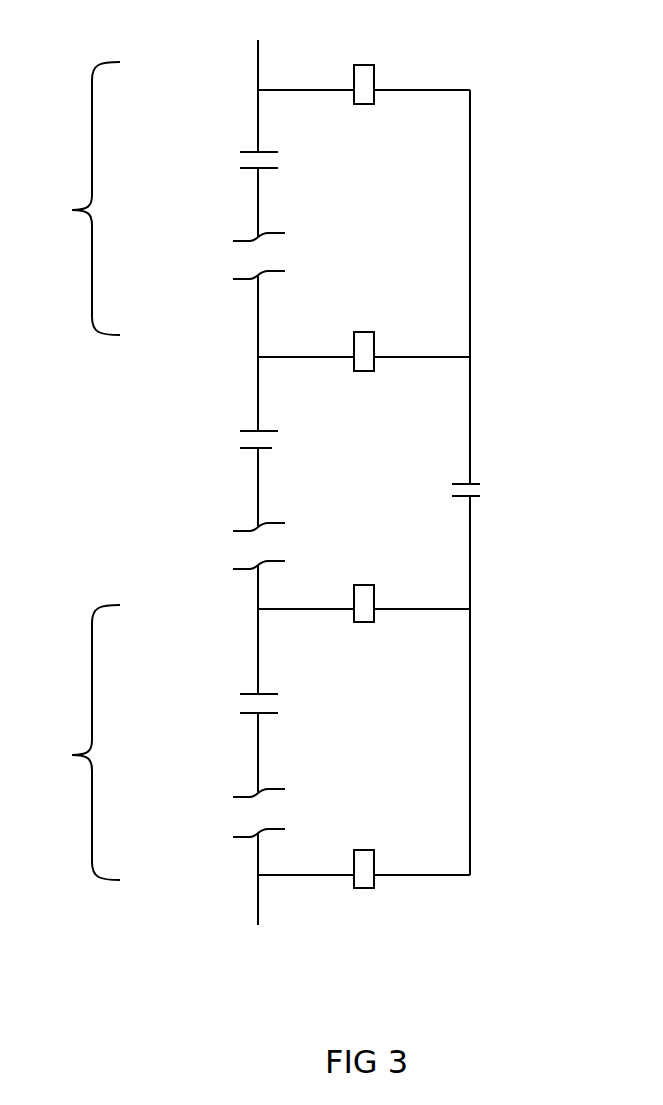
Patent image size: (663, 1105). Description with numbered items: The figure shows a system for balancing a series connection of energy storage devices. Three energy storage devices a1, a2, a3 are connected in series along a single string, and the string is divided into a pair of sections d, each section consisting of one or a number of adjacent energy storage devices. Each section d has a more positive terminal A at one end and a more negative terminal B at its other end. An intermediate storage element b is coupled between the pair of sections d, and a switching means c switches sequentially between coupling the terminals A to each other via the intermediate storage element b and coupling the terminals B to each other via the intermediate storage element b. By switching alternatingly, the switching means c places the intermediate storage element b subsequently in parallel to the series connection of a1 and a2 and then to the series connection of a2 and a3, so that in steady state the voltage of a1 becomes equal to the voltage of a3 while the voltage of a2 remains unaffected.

The more positive terminal A is at (252, 95).
The more negative terminal B is at (252, 356).
The energy storage device a1 is at (218, 162).
The energy storage device a2 is at (218, 443).
The energy storage device a3 is at (218, 703).
The intermediate storage element b is at (487, 487).
The switching means c is at (387, 62).
The section d is at (77, 471).